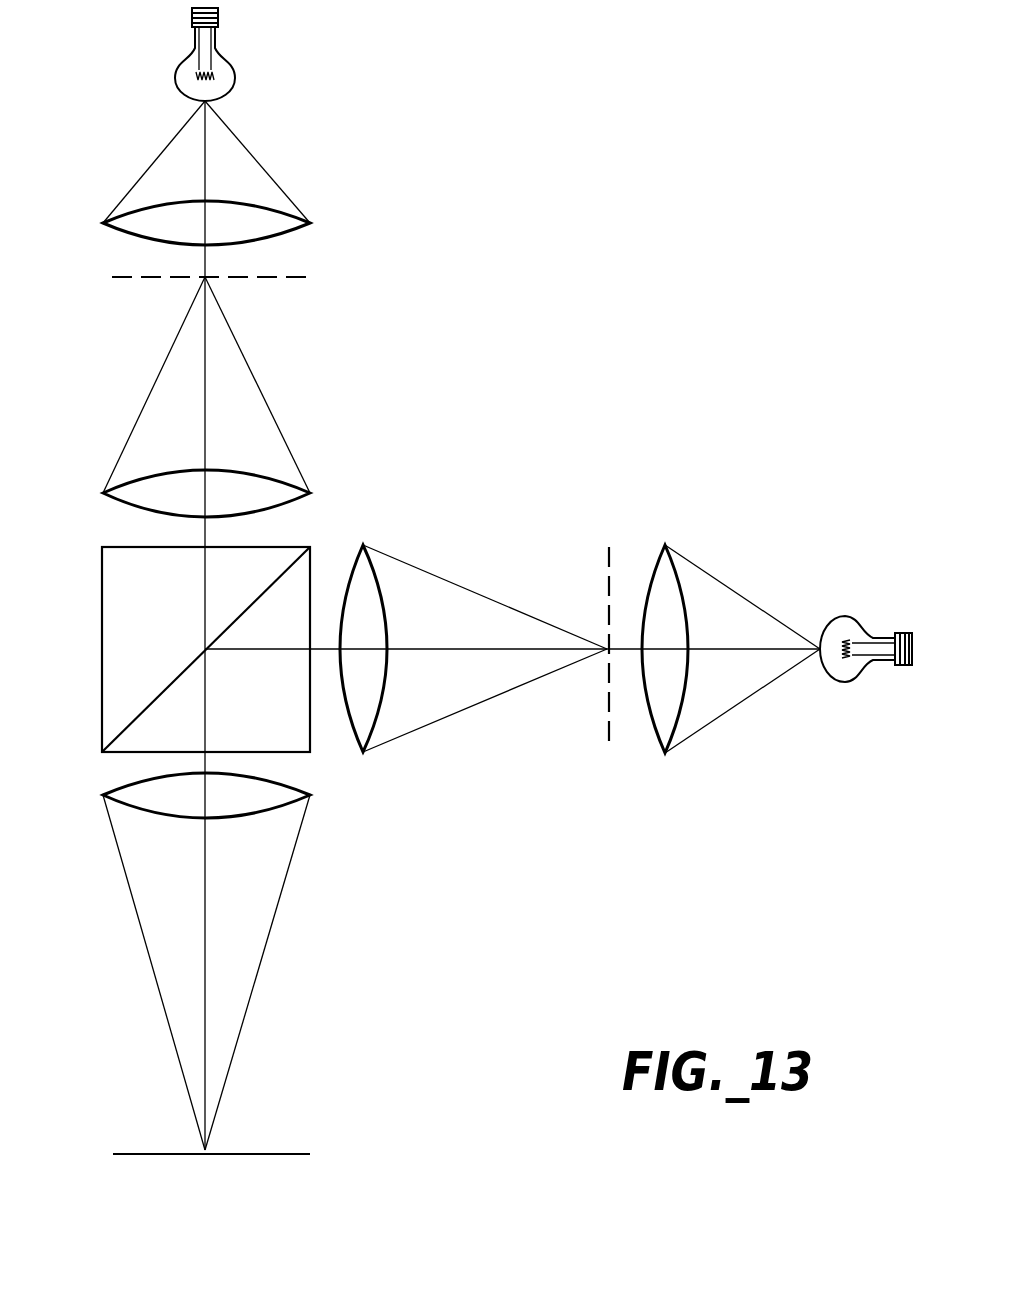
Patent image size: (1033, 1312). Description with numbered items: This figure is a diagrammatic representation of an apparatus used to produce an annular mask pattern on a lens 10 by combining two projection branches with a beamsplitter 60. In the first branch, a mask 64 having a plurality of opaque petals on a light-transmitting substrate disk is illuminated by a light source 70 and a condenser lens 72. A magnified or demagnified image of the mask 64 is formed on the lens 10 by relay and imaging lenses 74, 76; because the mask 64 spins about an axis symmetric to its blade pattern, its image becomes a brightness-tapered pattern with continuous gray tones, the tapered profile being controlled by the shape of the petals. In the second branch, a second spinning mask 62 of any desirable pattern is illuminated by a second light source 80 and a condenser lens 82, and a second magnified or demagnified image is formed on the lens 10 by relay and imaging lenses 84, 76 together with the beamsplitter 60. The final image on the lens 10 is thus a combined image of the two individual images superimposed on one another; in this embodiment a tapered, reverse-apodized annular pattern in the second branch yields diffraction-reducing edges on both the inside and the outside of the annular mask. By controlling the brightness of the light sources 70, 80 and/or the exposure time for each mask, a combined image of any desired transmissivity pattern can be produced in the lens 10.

The lens 10 is at (296, 1153).
The beamsplitter 60 is at (120, 547).
The second spinning mask 62 is at (611, 547).
The mask 64 is at (287, 277).
The light source 70 is at (240, 72).
The condenser lens 72 is at (312, 221).
The relay lens 74 is at (312, 491).
The imaging lens 76 is at (310, 795).
The second light source 80 is at (850, 616).
The second condenser lens 82 is at (666, 543).
The relay lens 84 is at (364, 543).